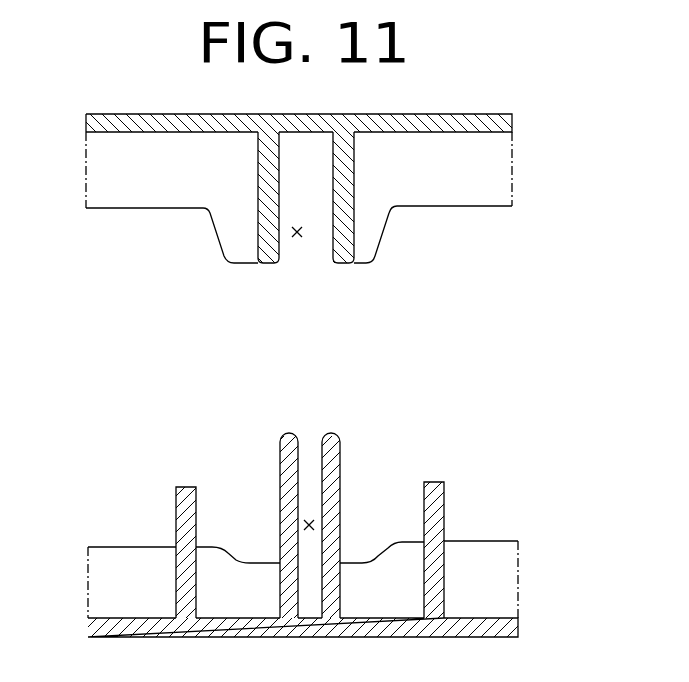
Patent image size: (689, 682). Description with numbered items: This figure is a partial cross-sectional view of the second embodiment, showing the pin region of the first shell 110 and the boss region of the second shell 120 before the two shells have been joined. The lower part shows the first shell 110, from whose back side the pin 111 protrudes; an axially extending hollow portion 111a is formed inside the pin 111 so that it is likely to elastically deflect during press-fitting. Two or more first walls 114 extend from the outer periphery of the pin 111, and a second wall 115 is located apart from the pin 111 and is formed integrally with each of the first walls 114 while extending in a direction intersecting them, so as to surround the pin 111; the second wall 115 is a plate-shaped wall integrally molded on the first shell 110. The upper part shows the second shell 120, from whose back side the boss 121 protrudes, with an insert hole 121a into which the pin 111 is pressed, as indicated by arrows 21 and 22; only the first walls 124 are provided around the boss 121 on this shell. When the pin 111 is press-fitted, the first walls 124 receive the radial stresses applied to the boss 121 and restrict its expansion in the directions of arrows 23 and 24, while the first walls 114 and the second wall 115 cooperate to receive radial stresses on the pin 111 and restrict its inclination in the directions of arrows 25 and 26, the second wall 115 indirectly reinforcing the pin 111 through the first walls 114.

The first shell 110 is at (507, 565).
The pin 111 is at (342, 485).
The hollow portion 111a is at (290, 520).
The first walls 114 is at (123, 555).
The second wall 115 is at (176, 510).
The second shell 120 is at (311, 239).
The boss 121 is at (348, 264).
The insert hole 121a is at (295, 242).
The first walls 124 is at (138, 201).
The arrow 21 is at (307, 258).
The arrow 22 is at (307, 407).
The arrow 23 is at (258, 252).
The arrow 24 is at (354, 248).
The arrow 25 is at (280, 445).
The arrow 26 is at (380, 448).